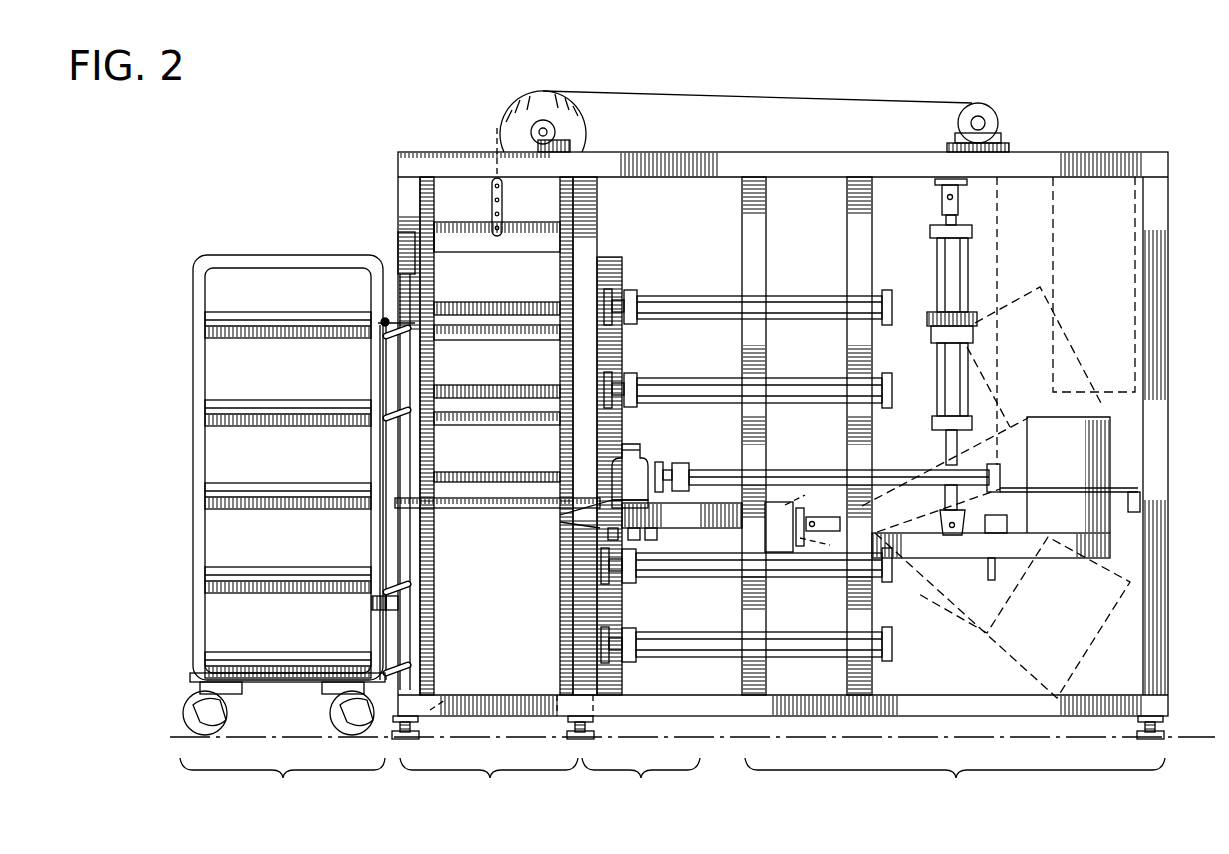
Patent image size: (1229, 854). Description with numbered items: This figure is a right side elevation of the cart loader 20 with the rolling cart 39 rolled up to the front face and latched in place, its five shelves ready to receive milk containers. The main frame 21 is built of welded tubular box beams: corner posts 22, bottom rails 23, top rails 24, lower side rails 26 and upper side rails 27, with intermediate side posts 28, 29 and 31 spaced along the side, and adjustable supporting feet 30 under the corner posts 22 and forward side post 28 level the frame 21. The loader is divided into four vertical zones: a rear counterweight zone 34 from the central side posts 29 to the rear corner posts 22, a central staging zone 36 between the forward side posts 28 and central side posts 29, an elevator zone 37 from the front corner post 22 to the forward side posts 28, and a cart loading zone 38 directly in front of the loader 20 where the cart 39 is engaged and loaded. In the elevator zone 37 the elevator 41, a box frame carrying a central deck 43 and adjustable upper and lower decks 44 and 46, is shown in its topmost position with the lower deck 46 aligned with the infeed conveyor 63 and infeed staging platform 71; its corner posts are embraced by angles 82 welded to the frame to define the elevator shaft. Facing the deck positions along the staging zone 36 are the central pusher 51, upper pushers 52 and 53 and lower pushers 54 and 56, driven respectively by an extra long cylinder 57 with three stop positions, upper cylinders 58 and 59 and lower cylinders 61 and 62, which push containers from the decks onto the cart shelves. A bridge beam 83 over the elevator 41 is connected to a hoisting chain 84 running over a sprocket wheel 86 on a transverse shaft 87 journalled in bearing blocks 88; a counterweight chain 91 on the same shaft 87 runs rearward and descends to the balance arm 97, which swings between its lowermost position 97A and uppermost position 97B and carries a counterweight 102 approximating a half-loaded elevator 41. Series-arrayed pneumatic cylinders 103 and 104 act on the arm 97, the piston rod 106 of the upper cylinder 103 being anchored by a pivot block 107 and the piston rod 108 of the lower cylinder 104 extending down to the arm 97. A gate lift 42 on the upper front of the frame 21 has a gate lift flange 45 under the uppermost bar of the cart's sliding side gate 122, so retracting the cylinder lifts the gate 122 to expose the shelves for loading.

The cart loader 20 is at (1077, 135).
The main frame 21 is at (1125, 158).
The corner posts 22 is at (405, 208).
The bottom rails 23 is at (440, 690).
The top rails 24 is at (398, 172).
The lower side rails 26 is at (950, 705).
The upper side rails 27 is at (730, 162).
The forward side post 28 is at (595, 218).
The central side post 29 is at (762, 216).
The adjustable supporting feet 30 is at (415, 730).
The rearmost central side post 31 is at (862, 246).
The rear counterweight zone 34 is at (955, 786).
The central staging zone 36 is at (641, 786).
The elevator zone 37 is at (489, 786).
The cart loading zone 38 is at (282, 786).
The rolling cart 39 is at (275, 258).
The elevator 41 is at (530, 250).
The gate lift 42 is at (402, 275).
The central deck 43 is at (495, 420).
The upper deck 44 is at (490, 332).
The gate lift flange 45 is at (380, 320).
The lower deck 46 is at (462, 508).
The central pusher 51 is at (658, 465).
The upper pusher 52 is at (612, 295).
The upper pusher 53 is at (612, 380).
The lower pusher 54 is at (612, 582).
The lower pusher 56 is at (612, 662).
The extra long cylinder 57 is at (785, 470).
The upper cylinder 58 is at (790, 305).
The upper cylinder 59 is at (785, 390).
The lower cylinder 61 is at (803, 570).
The lower cylinder 62 is at (803, 650).
The infeed conveyor 63 is at (632, 510).
The infeed staging platform 71 is at (575, 512).
The angles 82 is at (428, 525).
The bridge beam 83 is at (472, 235).
The hoisting chain 84 is at (503, 194).
The sprocket wheel 86 is at (516, 104).
The transverse shaft 87 is at (555, 130).
The bearing blocks 88 is at (497, 135).
The counterweight chain 91 is at (790, 88).
The balance arm 97 is at (950, 548).
The lowermost position of balance arm 97A is at (945, 600).
The uppermost position of balance arm 97B is at (1015, 462).
The counterweight 102 is at (1058, 340).
The upper pneumatic cylinder 103 is at (938, 262).
The lower pneumatic cylinder 104 is at (945, 380).
The piston rod of upper cylinder 106 is at (942, 200).
The pivot block 107 is at (967, 195).
The piston rod of lower cylinder 108 is at (946, 450).
The sliding side gate 122 is at (383, 440).